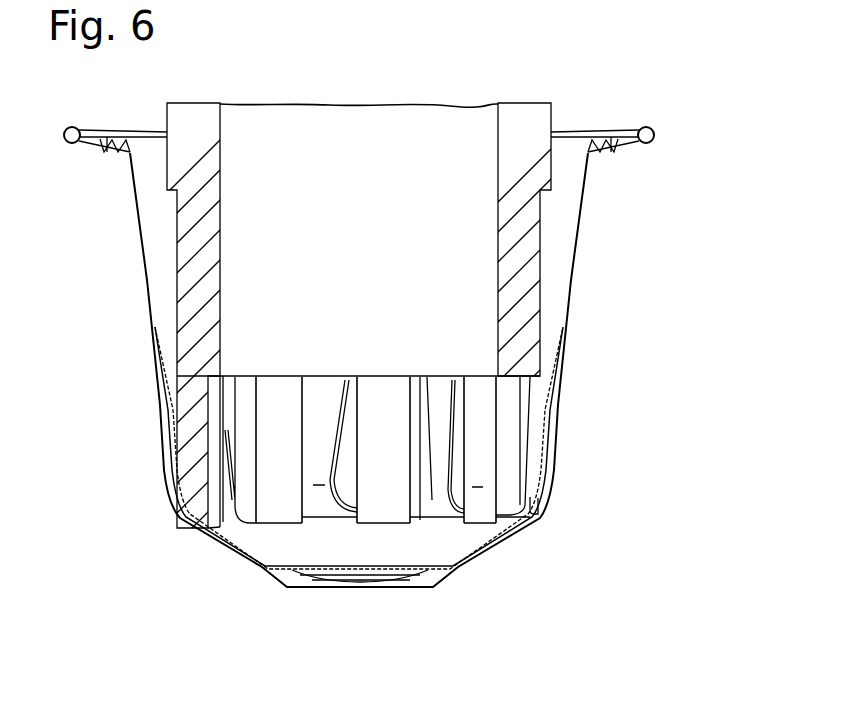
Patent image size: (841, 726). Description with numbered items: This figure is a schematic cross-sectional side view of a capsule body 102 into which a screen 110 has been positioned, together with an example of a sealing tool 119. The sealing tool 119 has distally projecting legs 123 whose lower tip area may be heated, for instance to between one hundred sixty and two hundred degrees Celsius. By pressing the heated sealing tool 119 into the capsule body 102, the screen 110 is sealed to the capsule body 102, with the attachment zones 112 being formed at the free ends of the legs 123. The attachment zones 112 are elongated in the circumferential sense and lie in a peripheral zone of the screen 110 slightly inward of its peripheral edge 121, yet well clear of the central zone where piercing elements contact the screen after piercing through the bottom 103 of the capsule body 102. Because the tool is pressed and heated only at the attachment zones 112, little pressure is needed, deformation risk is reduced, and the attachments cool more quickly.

The capsule body 102 is at (620, 253).
The sealing tool 119 is at (553, 106).
The distally projecting legs 123 is at (280, 400).
The peripheral edge 121 is at (545, 500).
The attachment zones 112 is at (212, 540).
The screen 110 is at (463, 572).
The bottom 103 is at (447, 590).